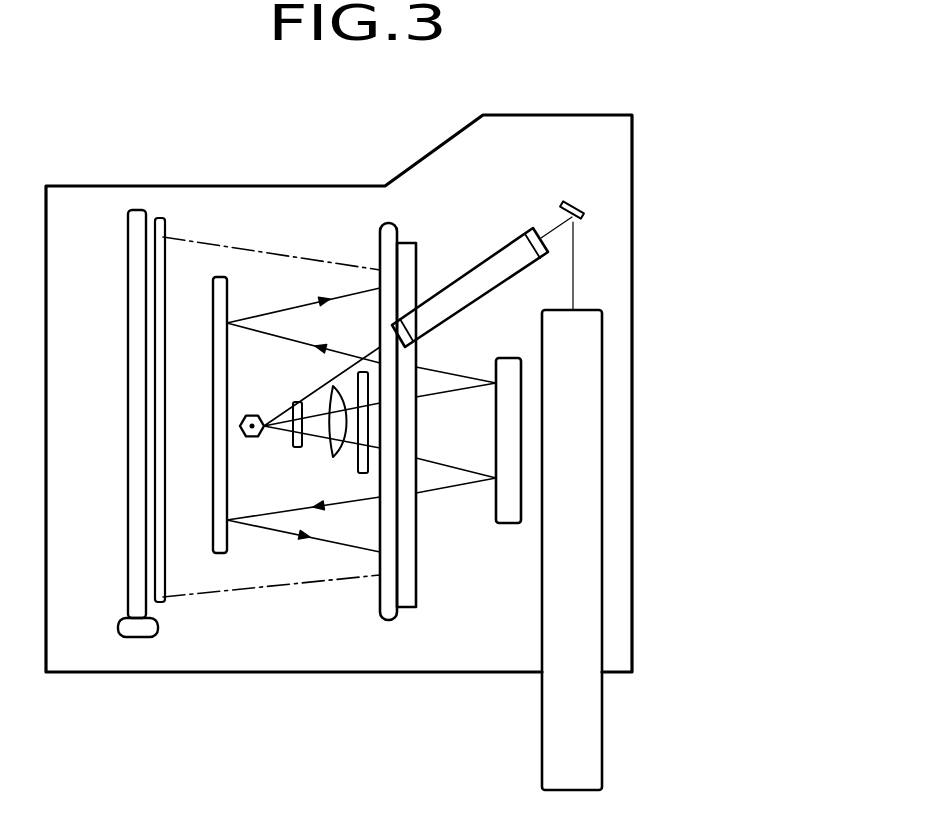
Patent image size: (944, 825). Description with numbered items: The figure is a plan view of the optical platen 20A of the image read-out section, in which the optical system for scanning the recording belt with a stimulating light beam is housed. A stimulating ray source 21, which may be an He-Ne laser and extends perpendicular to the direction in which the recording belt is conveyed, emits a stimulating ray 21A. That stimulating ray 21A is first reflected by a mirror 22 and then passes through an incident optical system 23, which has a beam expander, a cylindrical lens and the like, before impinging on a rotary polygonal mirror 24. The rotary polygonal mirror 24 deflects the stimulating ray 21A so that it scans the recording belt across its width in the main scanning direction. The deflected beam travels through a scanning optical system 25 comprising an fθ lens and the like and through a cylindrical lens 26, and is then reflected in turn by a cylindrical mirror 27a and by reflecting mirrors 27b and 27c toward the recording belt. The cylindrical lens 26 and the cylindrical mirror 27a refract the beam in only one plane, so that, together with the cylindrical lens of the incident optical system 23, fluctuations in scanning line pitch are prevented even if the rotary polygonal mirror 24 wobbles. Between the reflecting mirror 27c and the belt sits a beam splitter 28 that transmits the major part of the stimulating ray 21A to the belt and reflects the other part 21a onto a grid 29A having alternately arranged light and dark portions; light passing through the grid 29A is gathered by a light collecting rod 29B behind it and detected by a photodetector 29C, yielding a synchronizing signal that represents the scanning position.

The optical platen 20A is at (632, 175).
The stimulating ray source 21 is at (602, 462).
The stimulating ray 21A is at (573, 267).
The part of the stimulating ray reflected by the beam splitter 21a is at (275, 590).
The mirror 22 is at (567, 203).
The incident optical system 23 is at (475, 263).
The rotary polygonal mirror 24 is at (252, 414).
The scanning optical system 25 is at (337, 460).
The cylindrical lens 26 is at (358, 464).
The cylindrical mirror 27a is at (505, 523).
The reflecting mirror 27b is at (218, 470).
The reflecting mirror 27c is at (417, 607).
The beam splitter 28 is at (392, 620).
The grid 29A is at (162, 600).
The light collecting rod 29B is at (135, 537).
The photodetector 29C is at (140, 637).